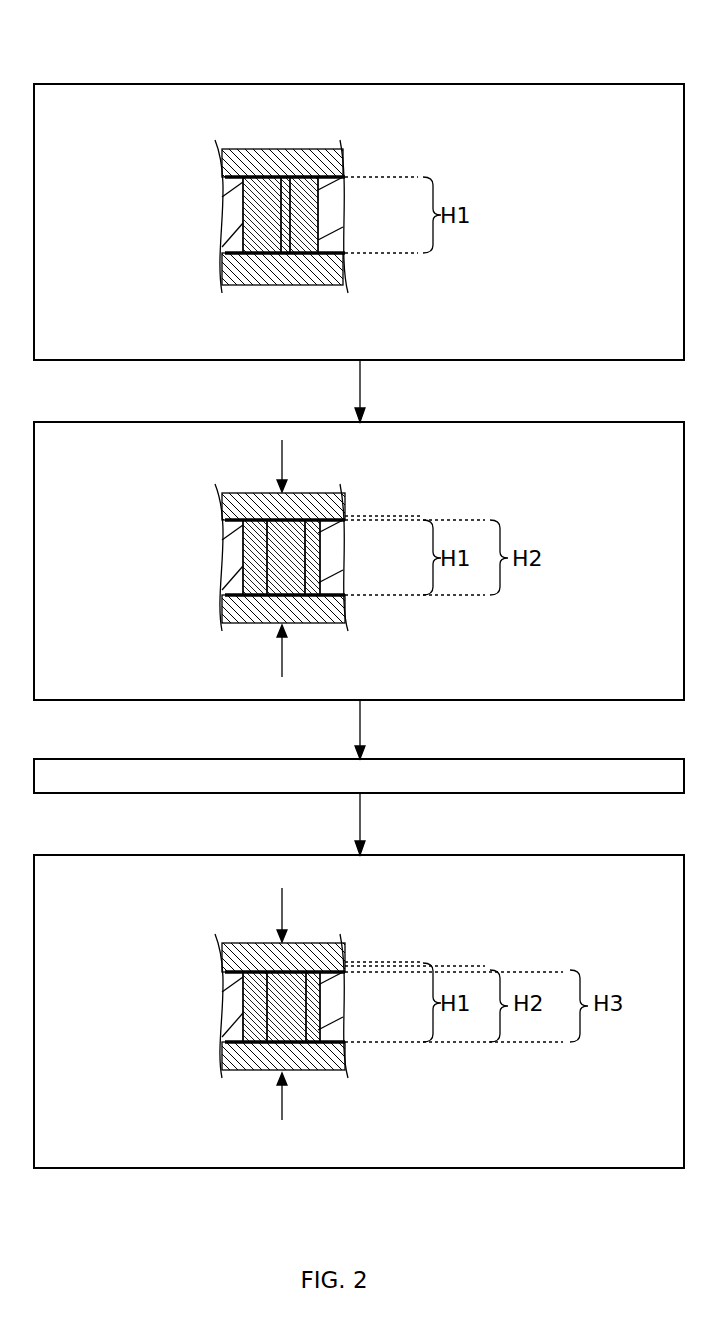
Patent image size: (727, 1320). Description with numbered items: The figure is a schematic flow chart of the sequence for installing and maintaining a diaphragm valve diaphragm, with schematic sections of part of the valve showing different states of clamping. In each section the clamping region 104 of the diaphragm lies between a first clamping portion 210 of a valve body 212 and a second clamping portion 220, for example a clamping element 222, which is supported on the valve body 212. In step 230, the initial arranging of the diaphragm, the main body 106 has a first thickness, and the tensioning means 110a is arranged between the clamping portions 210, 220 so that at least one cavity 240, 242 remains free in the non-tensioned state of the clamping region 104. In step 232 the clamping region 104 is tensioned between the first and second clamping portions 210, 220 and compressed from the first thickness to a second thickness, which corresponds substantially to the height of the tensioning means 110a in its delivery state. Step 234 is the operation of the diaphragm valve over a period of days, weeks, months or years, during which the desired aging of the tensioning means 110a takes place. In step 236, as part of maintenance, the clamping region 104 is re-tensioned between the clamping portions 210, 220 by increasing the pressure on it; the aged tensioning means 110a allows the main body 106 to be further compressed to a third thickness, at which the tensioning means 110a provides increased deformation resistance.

The clamping region 104 is at (194, 218).
The main body 106 is at (333, 200).
The tensioning means 110a is at (250, 203).
The first clamping portion 210 is at (278, 238).
The valve body 212 is at (253, 272).
The second clamping portion 220 is at (292, 256).
The clamping element 222 is at (310, 165).
The cavity 240 is at (251, 164).
The cavity 242 is at (311, 270).
The step of arranging the diaphragm 230 is at (606, 120).
The step of tensioning the clamping region 232 is at (609, 464).
The step of operating the diaphragm valve 234 is at (607, 787).
The step of re-tensioning 236 is at (606, 897).